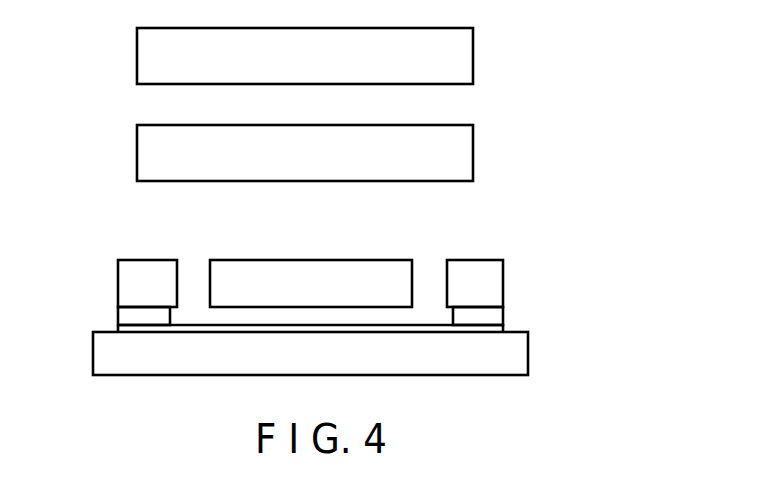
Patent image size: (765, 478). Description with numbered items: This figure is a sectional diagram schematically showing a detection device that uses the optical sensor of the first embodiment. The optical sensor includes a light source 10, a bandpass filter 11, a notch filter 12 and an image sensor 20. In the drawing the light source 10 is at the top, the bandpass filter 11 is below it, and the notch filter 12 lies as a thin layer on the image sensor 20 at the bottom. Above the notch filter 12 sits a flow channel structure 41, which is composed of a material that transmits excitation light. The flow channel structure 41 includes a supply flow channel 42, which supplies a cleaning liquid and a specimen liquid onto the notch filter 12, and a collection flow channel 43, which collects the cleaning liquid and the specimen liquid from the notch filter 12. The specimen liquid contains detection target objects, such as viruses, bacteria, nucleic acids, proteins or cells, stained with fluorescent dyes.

The light source 10 is at (473, 58).
The bandpass filter 11 is at (473, 153).
The notch filter 12 is at (495, 330).
The image sensor 20 is at (518, 355).
The flow channel structure 41 is at (118, 280).
The supply flow channel 42 is at (193, 278).
The collection flow channel 43 is at (431, 278).